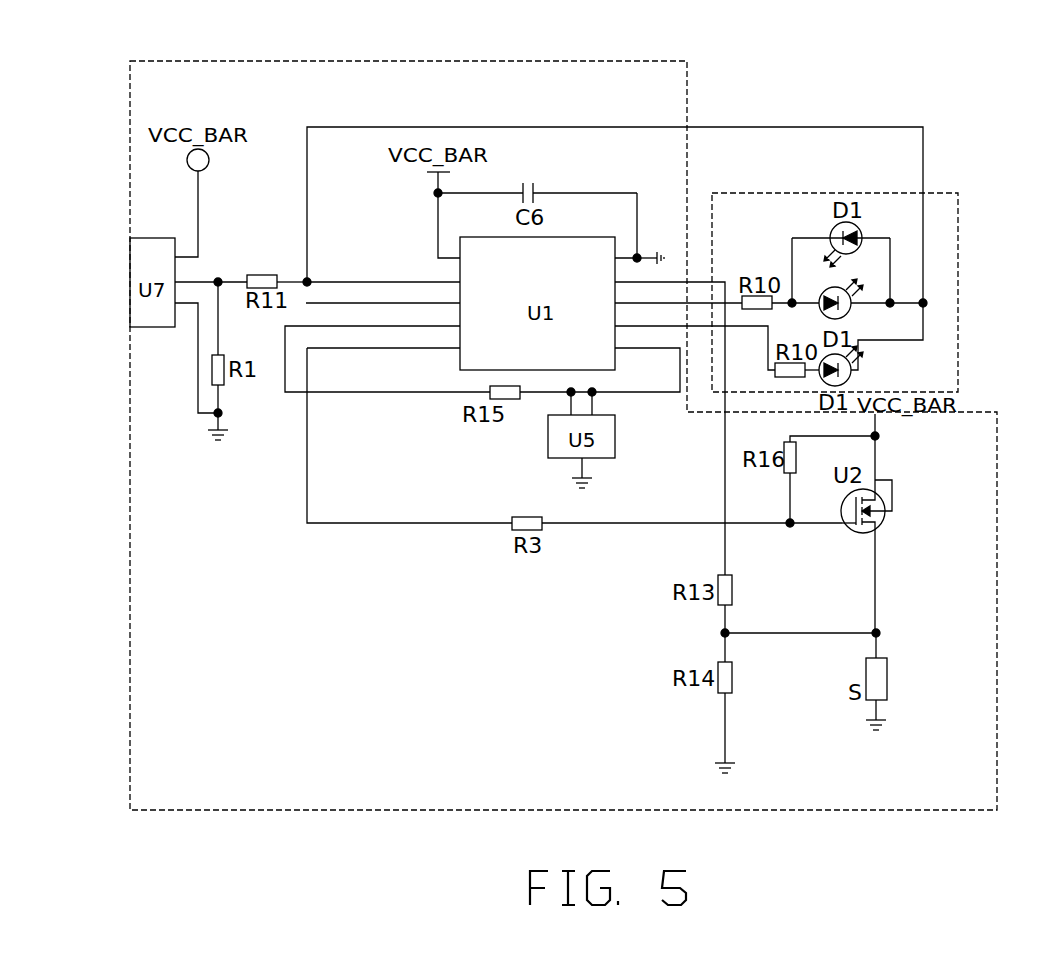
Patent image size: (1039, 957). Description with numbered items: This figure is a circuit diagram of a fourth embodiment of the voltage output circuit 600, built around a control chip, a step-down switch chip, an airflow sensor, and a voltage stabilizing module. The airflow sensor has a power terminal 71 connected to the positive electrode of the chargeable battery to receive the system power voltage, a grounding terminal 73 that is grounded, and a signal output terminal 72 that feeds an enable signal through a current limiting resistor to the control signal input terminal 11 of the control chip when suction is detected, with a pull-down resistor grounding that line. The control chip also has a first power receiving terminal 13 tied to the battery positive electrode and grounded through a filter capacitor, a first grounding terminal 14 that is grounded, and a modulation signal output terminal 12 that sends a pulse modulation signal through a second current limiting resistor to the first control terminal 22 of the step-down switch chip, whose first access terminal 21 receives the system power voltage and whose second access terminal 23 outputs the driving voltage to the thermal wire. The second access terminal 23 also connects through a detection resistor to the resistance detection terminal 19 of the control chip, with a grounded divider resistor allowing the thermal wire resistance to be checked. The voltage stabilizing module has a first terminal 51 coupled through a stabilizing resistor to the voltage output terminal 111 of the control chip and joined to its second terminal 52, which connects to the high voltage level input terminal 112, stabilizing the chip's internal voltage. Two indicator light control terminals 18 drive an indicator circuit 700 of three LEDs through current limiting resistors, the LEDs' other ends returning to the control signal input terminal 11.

The voltage output circuit 600 is at (660, 61).
The indicator circuit 700 is at (958, 193).
The power terminal 71 is at (176, 258).
The signal output terminal 72 is at (177, 282).
The grounding terminal 73 is at (177, 303).
The control signal input terminal 11 is at (453, 279).
The modulation signal output terminal 12 is at (456, 345).
The first power receiving terminal 13 is at (459, 250).
The first grounding terminal 14 is at (618, 250).
The indicator light control terminal 18 is at (626, 292).
The resistance detection terminal 19 is at (629, 271).
The voltage output terminal 111 is at (453, 322).
The high voltage level input terminal 112 is at (617, 345).
The first terminal 51 is at (565, 395).
The second terminal 52 is at (597, 393).
The first access terminal 21 is at (875, 473).
The first control terminal 22 is at (838, 525).
The second access terminal 23 is at (877, 543).